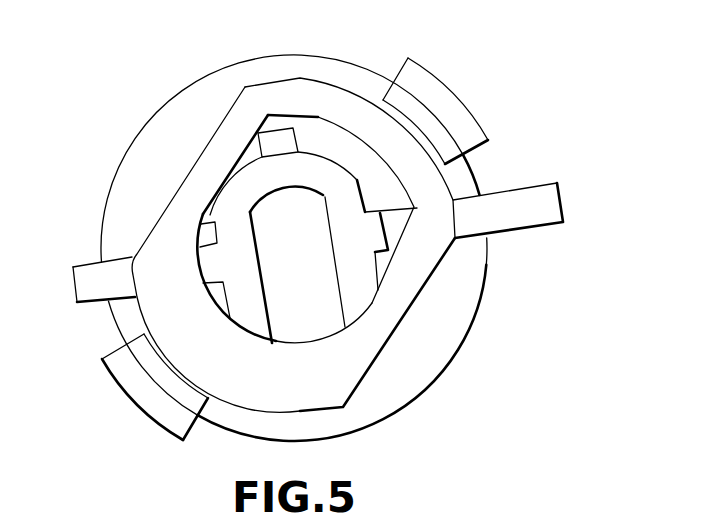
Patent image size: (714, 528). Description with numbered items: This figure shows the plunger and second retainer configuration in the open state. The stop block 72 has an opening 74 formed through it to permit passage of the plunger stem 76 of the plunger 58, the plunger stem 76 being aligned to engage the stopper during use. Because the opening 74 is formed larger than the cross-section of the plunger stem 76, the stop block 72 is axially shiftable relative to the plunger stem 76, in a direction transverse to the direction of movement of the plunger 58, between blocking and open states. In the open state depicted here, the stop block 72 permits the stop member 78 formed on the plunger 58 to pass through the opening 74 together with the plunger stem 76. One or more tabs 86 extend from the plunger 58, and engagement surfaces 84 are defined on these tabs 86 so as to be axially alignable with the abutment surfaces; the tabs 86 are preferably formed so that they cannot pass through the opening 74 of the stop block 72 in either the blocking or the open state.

The plunger 58 is at (473, 268).
The stop block 72 is at (342, 392).
The opening 74 is at (333, 147).
The plunger stem 76 is at (260, 257).
The stop member 78 is at (278, 138).
The engagement surfaces 84 is at (517, 197).
The tabs 86 is at (562, 224).